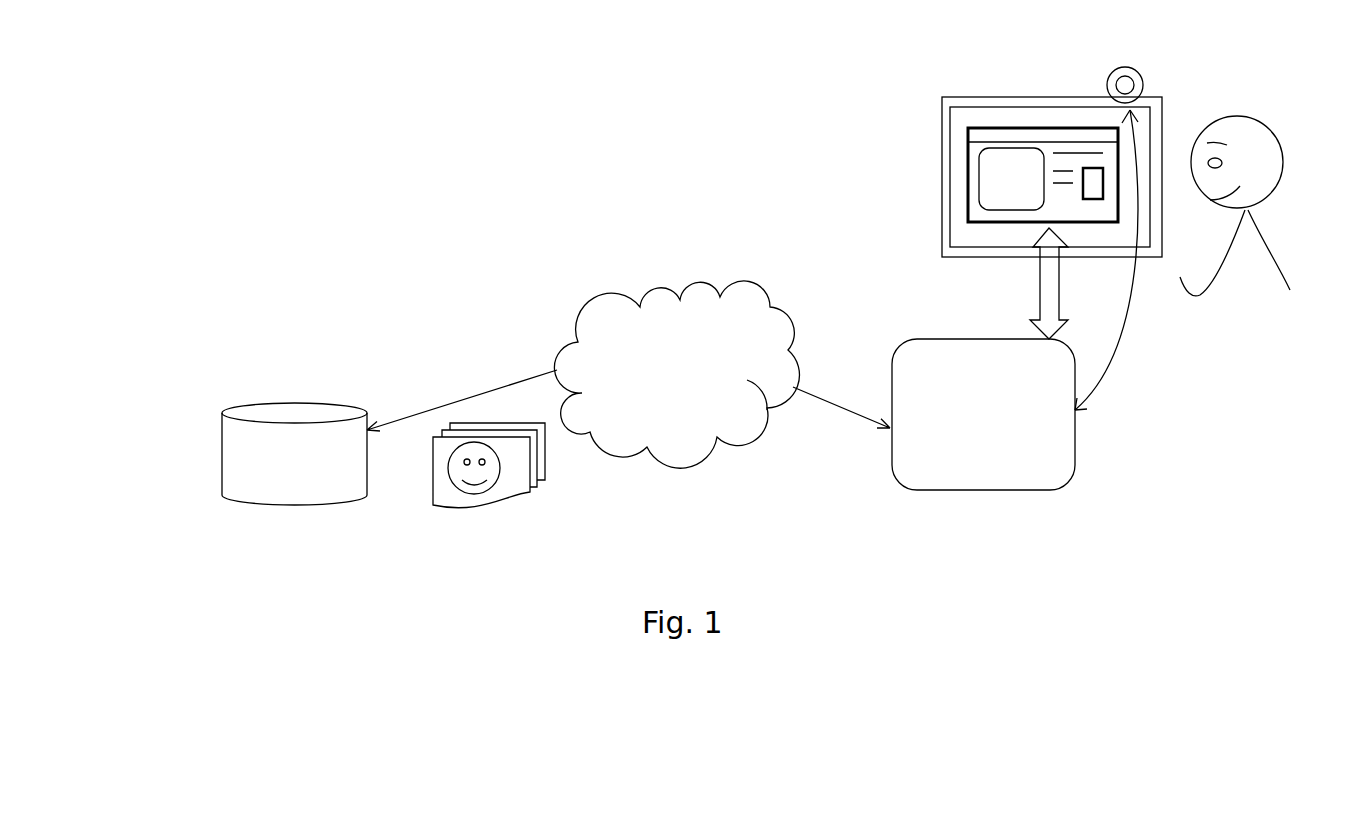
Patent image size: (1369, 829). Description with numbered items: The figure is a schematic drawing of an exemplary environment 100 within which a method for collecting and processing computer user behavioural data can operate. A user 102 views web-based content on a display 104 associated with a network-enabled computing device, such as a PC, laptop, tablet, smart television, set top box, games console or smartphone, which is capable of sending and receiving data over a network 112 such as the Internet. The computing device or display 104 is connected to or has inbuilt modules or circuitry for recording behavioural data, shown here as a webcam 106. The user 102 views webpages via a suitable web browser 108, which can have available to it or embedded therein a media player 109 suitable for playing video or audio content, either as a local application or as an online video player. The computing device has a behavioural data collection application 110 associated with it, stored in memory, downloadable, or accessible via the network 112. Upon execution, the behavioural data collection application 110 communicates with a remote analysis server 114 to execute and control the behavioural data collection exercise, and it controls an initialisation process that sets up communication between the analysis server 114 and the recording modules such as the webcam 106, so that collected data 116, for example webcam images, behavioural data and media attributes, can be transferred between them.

The environment 100 is at (464, 127).
The user 102 is at (1273, 245).
The display 104 is at (1012, 95).
The webcam 106 is at (1138, 72).
The web browser 108 is at (968, 133).
The media player 109 is at (980, 178).
The behavioural data collection application 110 is at (1072, 462).
The network 112 is at (755, 282).
The analysis server 114 is at (222, 448).
The collected data 116 is at (470, 505).